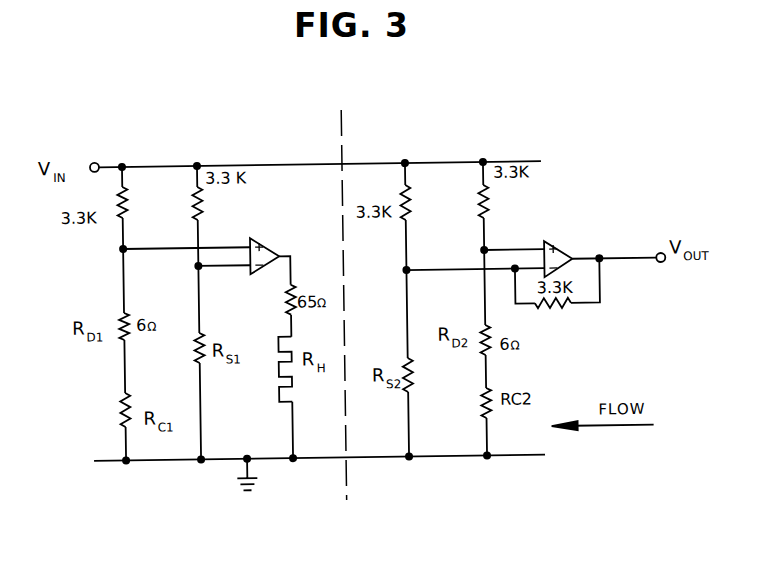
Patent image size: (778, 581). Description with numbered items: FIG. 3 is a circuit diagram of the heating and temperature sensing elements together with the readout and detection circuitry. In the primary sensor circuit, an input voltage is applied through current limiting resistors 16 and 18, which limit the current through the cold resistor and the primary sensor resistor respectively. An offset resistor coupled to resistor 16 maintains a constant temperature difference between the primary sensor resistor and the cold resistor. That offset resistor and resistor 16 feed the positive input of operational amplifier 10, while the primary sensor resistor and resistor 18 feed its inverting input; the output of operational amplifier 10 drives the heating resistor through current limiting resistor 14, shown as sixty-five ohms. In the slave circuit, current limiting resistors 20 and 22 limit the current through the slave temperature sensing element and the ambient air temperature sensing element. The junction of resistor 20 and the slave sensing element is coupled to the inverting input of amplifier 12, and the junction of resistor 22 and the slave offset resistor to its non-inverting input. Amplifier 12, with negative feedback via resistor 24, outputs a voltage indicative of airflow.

The operational amplifier 10 is at (261, 240).
The amplifier 12 is at (557, 245).
The current limiting resistor 14 is at (288, 300).
The current limiting resistor 16 is at (125, 207).
The current limiting resistor 18 is at (204, 207).
The current limiting resistor 20 is at (413, 210).
The current limiting resistor 22 is at (491, 206).
The feedback resistor 24 is at (552, 311).